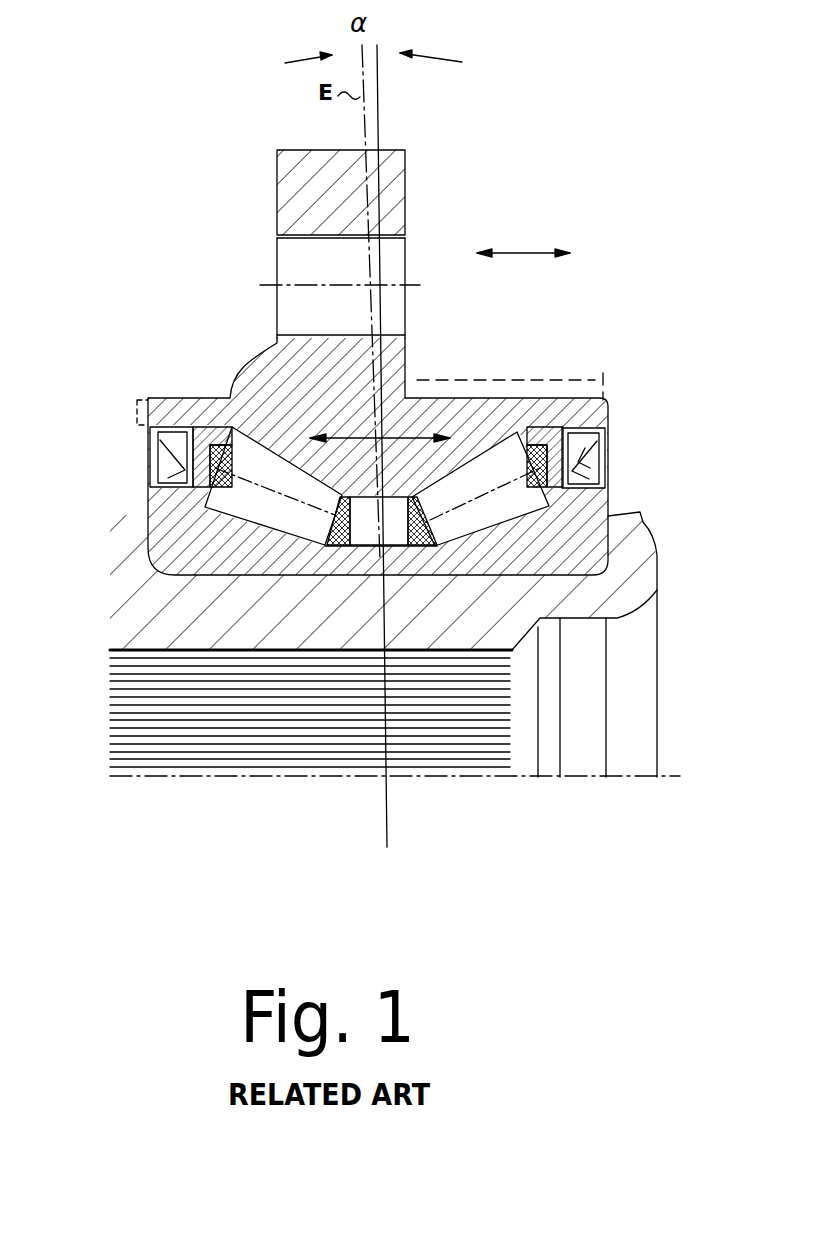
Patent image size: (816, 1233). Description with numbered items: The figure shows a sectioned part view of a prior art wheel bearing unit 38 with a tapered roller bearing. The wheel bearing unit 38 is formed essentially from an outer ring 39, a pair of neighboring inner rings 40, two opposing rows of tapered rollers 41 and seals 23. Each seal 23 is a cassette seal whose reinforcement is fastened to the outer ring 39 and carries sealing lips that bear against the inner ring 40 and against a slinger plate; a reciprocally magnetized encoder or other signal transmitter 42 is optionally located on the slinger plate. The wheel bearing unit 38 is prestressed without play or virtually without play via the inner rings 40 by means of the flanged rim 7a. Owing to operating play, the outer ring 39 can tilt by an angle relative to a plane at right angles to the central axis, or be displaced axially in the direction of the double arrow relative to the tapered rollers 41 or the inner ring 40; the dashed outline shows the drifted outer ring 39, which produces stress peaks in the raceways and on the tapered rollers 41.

The wheel bearing unit 38 is at (623, 78).
The outer ring 39 is at (572, 373).
The seal 23 is at (147, 440).
The inner ring 40 is at (180, 518).
The tapered roller 41 is at (273, 508).
The signal transmitter 42 is at (605, 465).
The flanged rim 7a is at (640, 531).